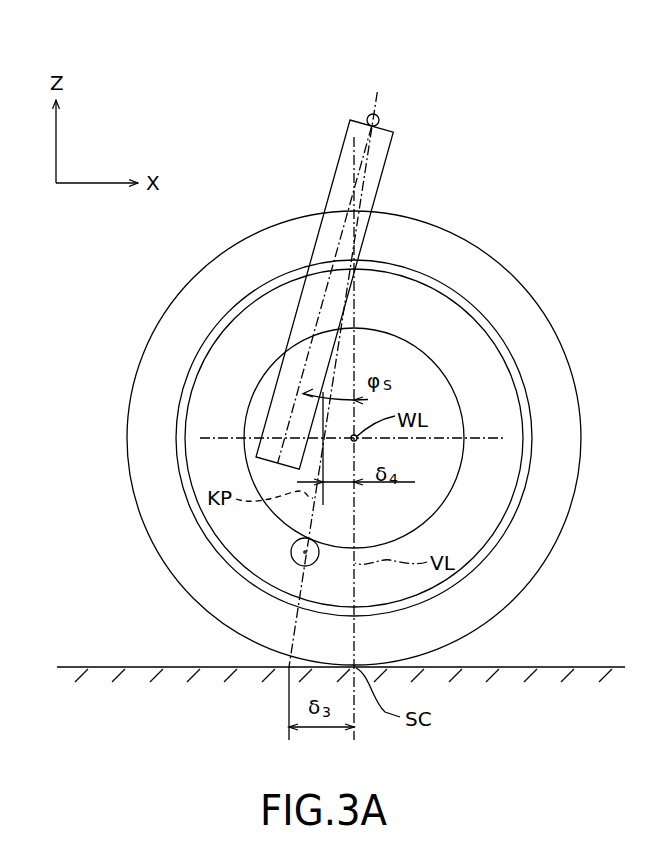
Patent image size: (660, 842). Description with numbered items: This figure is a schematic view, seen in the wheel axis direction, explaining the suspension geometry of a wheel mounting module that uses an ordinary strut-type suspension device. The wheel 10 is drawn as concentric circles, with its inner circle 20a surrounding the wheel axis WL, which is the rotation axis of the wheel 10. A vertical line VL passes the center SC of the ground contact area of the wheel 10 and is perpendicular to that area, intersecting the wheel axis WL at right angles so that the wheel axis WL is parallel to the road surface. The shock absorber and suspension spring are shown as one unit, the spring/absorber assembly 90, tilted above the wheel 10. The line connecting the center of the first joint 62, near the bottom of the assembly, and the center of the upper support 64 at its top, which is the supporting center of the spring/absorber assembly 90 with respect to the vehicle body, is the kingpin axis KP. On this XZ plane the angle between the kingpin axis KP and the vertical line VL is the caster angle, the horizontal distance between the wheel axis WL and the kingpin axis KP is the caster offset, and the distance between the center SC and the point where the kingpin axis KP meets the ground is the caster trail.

The wheel 10 is at (548, 345).
The wheel hub / rim 20a is at (403, 353).
The first joint 62 is at (292, 560).
The upper support 64 is at (379, 115).
The spring/absorber assembly 90 is at (316, 247).